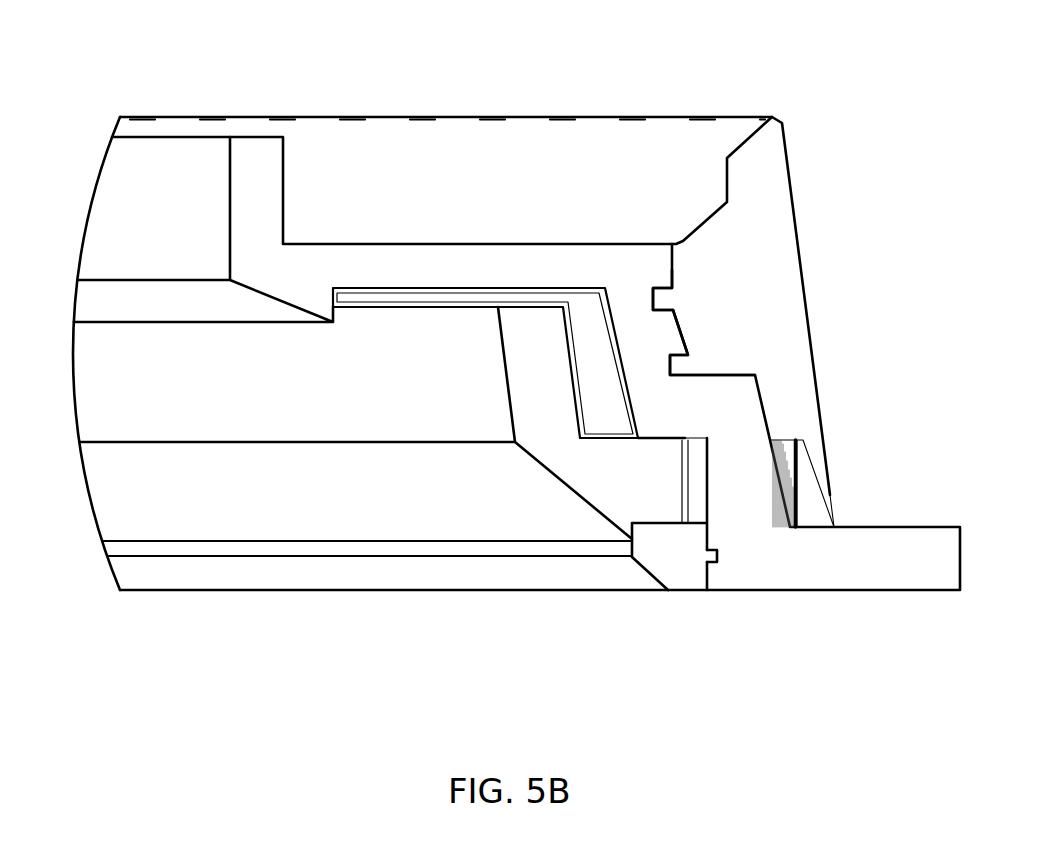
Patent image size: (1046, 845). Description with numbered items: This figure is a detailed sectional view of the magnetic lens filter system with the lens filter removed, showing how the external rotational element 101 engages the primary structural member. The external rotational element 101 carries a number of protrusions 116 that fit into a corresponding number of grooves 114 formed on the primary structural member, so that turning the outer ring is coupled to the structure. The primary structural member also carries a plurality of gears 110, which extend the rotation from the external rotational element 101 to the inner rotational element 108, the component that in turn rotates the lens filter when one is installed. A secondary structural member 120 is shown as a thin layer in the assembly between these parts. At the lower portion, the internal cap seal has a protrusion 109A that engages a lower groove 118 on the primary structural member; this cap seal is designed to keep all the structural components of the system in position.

The external rotational element 101 is at (797, 318).
The inner rotational element 108 is at (550, 443).
The protrusion 109A is at (688, 563).
The gears 110 is at (795, 475).
The grooves 114 is at (643, 281).
The protrusions 116 is at (694, 305).
The lower groove 118 is at (727, 556).
The secondary structural member 120 is at (582, 305).